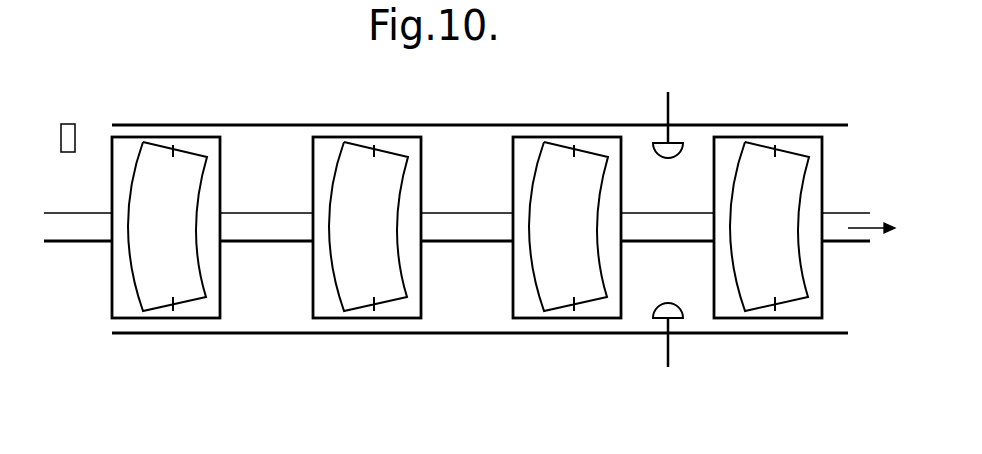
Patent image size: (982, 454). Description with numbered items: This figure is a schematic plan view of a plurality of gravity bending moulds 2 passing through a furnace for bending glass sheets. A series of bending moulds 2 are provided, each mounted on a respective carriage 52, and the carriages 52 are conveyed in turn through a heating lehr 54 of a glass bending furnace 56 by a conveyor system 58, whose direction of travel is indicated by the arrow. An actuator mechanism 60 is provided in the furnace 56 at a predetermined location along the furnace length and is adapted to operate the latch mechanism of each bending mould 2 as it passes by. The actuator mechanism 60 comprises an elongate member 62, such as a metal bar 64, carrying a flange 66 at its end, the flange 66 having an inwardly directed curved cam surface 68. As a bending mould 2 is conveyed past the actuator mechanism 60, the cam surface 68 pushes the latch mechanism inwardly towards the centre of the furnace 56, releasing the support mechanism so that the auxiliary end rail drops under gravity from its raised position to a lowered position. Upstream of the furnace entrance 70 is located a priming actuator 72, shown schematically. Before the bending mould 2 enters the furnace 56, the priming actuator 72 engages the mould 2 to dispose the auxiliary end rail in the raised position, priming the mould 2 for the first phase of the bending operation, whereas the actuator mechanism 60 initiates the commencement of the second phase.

The bending mould 2 is at (185, 150).
The carriage 52 is at (222, 153).
The heating lehr 54 is at (465, 320).
The glass bending furnace 56 is at (297, 337).
The conveyor system 58 is at (259, 232).
The actuator mechanism 60 is at (665, 357).
The elongate member 62 is at (665, 325).
The metal bar 64 is at (672, 328).
The flange 66 is at (658, 142).
The curved cam surface 68 is at (672, 156).
The furnace entrance 70 is at (117, 330).
The priming actuator 72 is at (70, 122).